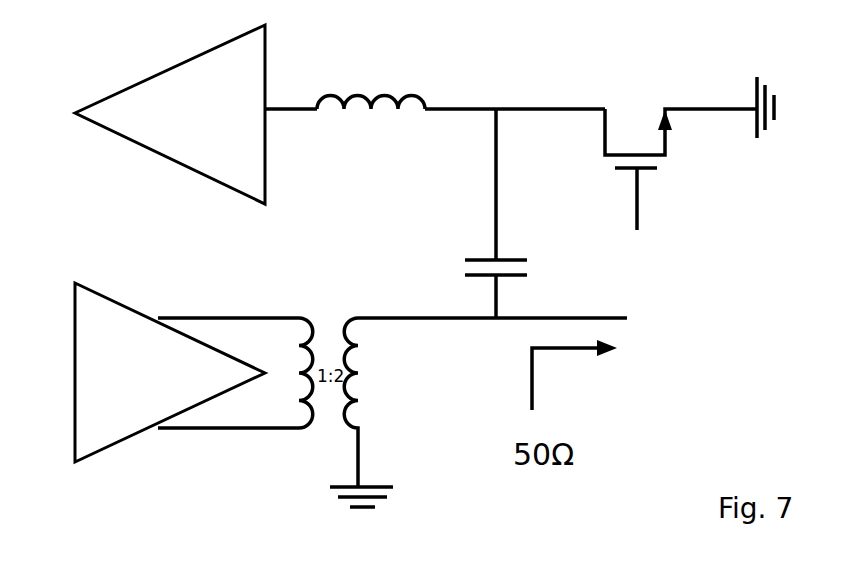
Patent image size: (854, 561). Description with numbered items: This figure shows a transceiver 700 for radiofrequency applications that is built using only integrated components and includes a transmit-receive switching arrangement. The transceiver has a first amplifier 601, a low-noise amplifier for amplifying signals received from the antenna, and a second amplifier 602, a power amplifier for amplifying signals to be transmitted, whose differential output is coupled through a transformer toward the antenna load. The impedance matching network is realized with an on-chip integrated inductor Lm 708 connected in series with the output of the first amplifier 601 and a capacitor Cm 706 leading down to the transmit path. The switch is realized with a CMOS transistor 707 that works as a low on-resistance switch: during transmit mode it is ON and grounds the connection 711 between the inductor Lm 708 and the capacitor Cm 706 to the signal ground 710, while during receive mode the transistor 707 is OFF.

The transceiver 700 is at (90, 53).
The first amplifier 601 is at (165, 158).
The second amplifier 602 is at (128, 308).
The capacitor Cm 706 is at (478, 255).
The CMOS transistor 707 is at (603, 152).
The inductor Lm 708 is at (412, 93).
The signal ground 710 is at (757, 95).
The connection 711 is at (496, 109).